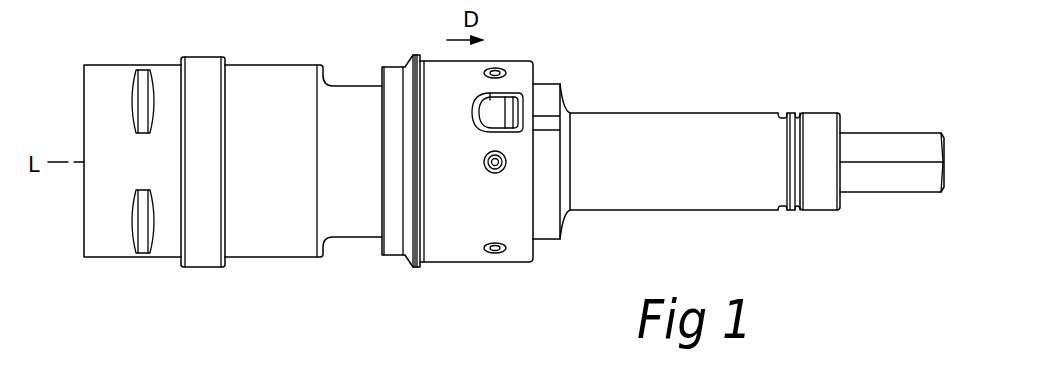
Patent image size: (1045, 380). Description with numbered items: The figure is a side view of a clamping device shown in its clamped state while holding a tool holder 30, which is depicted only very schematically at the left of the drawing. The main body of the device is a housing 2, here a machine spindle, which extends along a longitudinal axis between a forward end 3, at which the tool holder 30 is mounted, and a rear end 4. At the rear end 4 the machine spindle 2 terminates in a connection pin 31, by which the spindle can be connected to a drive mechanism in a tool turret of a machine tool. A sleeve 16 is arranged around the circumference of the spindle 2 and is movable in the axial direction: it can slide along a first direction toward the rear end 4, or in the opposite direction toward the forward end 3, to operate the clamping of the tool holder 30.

The tool holder 30 is at (90, 88).
The forward end 3 is at (177, 52).
The housing 2 is at (265, 84).
The sleeve 16 is at (438, 72).
The rear end 4 is at (915, 85).
The connection pin 31 is at (905, 176).